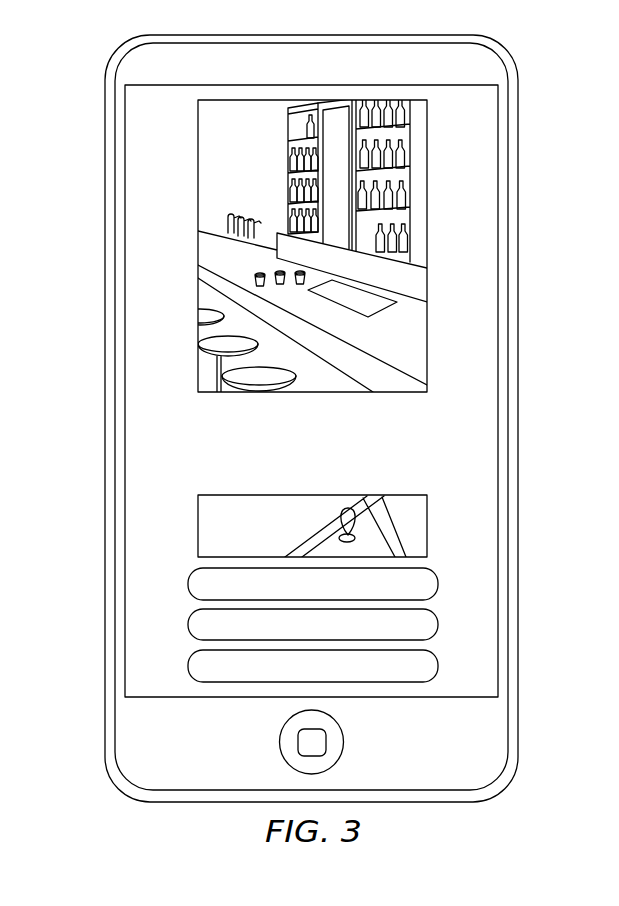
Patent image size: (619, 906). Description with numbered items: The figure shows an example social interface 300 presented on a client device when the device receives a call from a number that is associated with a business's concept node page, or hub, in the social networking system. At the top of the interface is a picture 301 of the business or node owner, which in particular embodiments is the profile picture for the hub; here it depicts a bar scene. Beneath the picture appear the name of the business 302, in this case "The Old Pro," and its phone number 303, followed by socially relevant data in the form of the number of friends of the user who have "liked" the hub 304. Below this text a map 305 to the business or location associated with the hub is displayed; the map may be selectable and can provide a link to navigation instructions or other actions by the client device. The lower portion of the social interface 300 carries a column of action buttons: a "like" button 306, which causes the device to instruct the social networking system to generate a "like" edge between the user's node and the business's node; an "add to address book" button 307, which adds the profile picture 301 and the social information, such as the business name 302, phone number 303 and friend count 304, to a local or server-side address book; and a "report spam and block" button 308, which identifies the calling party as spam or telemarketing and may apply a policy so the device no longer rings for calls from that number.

The social interface 300 is at (500, 239).
The picture 301 is at (427, 174).
The name of the business 302 is at (369, 417).
The phone number 303 is at (389, 448).
The number of friends who have liked the hub 304 is at (403, 475).
The map 305 is at (427, 525).
The like button 306 is at (438, 581).
The add to address book button 307 is at (438, 622).
The report spam and block button 308 is at (438, 663).